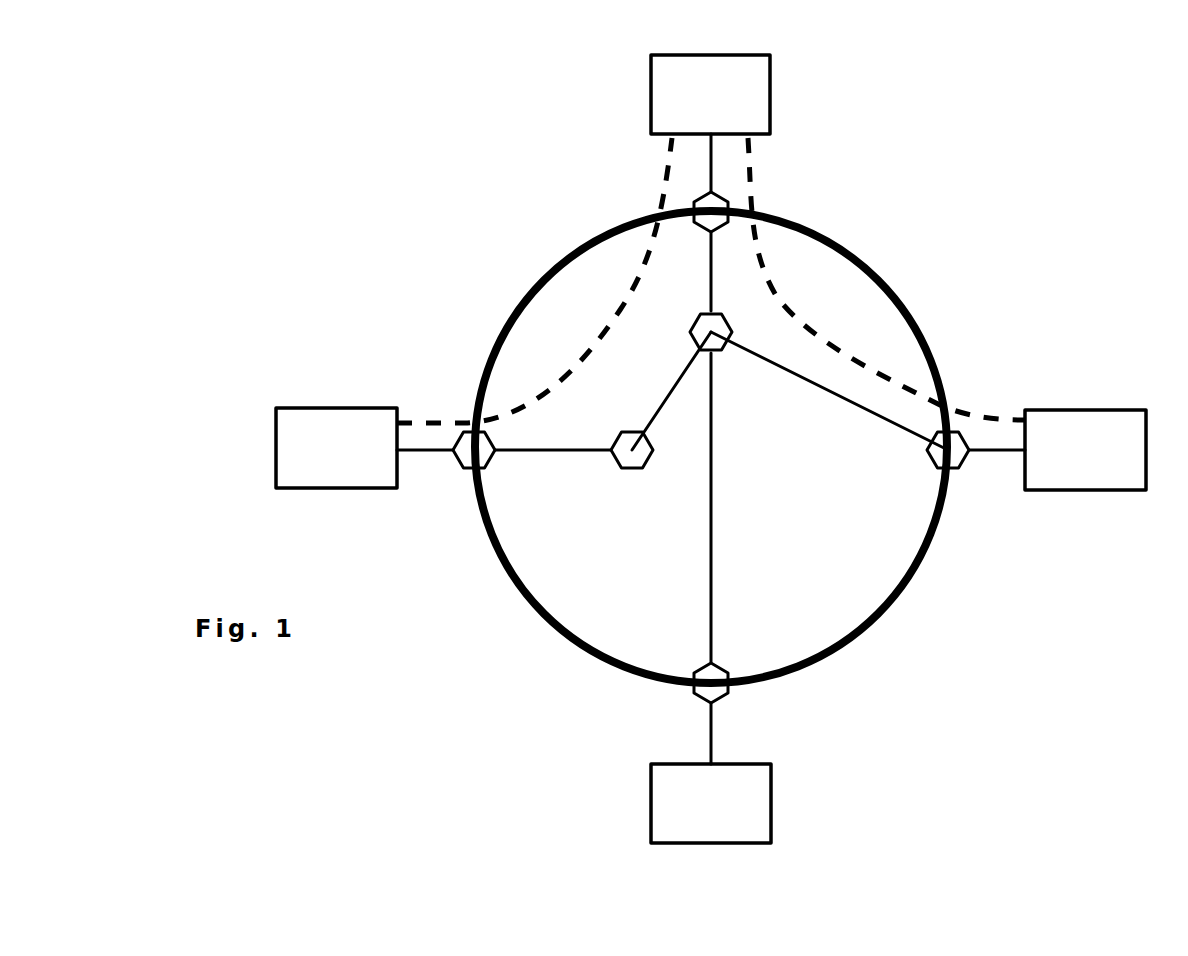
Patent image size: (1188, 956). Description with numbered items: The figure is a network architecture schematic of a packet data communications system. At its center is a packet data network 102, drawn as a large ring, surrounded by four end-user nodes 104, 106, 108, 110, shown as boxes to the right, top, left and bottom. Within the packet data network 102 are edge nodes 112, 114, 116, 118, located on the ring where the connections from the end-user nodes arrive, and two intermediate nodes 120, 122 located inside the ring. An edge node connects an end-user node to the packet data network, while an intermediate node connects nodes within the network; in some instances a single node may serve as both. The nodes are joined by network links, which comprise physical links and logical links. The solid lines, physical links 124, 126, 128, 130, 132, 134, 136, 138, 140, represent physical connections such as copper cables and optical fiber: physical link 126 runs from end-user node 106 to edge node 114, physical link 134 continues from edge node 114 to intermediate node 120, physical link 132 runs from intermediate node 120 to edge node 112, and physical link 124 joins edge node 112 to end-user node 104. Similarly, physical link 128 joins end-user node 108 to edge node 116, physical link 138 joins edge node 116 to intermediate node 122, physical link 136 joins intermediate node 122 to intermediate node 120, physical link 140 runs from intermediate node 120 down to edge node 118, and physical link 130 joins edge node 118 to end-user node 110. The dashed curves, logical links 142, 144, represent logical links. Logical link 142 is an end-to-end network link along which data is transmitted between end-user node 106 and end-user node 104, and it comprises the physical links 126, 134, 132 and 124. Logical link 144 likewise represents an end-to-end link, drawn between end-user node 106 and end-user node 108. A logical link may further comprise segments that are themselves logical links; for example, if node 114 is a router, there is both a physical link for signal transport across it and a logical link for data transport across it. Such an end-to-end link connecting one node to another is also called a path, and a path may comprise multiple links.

The packet data network 102 is at (910, 588).
The end-user node 104 is at (1103, 412).
The end-user node 106 is at (651, 110).
The end-user node 108 is at (276, 469).
The end-user node 110 is at (650, 815).
The edge node 112 is at (927, 457).
The edge node 114 is at (727, 203).
The edge node 116 is at (460, 430).
The edge node 118 is at (695, 697).
The intermediate node 120 is at (693, 323).
The intermediate node 122 is at (653, 460).
The physical link 124 is at (990, 453).
The physical link 126 is at (710, 177).
The physical link 128 is at (422, 452).
The physical link 130 is at (713, 740).
The physical link 132 is at (835, 402).
The physical link 134 is at (714, 275).
The physical link 136 is at (663, 397).
The physical link 138 is at (552, 452).
The physical link 140 is at (712, 483).
The logical link 142 is at (852, 352).
The logical link 144 is at (600, 335).